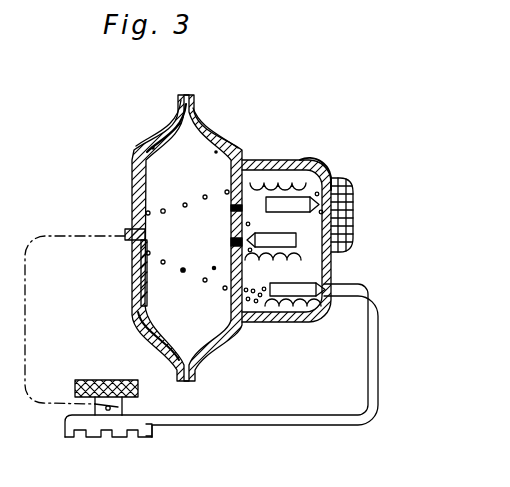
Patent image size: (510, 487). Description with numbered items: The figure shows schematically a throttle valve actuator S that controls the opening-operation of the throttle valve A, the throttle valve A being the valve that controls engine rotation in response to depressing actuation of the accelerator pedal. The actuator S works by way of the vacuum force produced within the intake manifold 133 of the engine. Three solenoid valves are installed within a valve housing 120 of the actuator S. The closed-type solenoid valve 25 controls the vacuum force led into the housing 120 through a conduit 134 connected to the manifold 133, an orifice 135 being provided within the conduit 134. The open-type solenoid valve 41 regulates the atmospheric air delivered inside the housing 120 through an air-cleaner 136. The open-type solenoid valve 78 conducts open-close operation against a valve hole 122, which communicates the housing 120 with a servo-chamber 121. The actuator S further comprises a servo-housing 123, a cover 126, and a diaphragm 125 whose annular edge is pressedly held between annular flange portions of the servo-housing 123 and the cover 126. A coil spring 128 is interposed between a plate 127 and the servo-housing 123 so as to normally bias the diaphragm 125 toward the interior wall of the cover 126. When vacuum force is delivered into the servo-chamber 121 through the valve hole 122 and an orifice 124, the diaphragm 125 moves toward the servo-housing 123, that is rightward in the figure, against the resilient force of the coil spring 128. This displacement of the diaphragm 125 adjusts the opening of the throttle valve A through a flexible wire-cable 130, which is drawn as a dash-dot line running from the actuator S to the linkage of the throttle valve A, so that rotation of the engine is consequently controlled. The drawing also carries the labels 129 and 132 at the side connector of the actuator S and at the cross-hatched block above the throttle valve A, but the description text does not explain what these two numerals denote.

The actuator S is at (131, 158).
The throttle valve A is at (103, 419).
The closed-type solenoid valve 25 is at (276, 286).
The open-type solenoid valve 41 is at (320, 176).
The open-type solenoid valve 78 is at (296, 236).
The valve housing 120 is at (297, 166).
The servo-chamber 121 is at (218, 151).
The valve hole 122 is at (236, 242).
The servo-housing 123 is at (220, 133).
The orifice 124 is at (232, 208).
The diaphragm 125 is at (171, 346).
The cover 126 is at (166, 129).
The plate 127 is at (147, 292).
The coil spring 128 is at (163, 209).
The side connector 129 is at (127, 234).
The flexible wire-cable 130 is at (40, 236).
The valve block 132 is at (103, 380).
The intake manifold 133 is at (153, 432).
The conduit 134 is at (320, 426).
The orifice 135 is at (343, 290).
The air-cleaner 136 is at (348, 207).